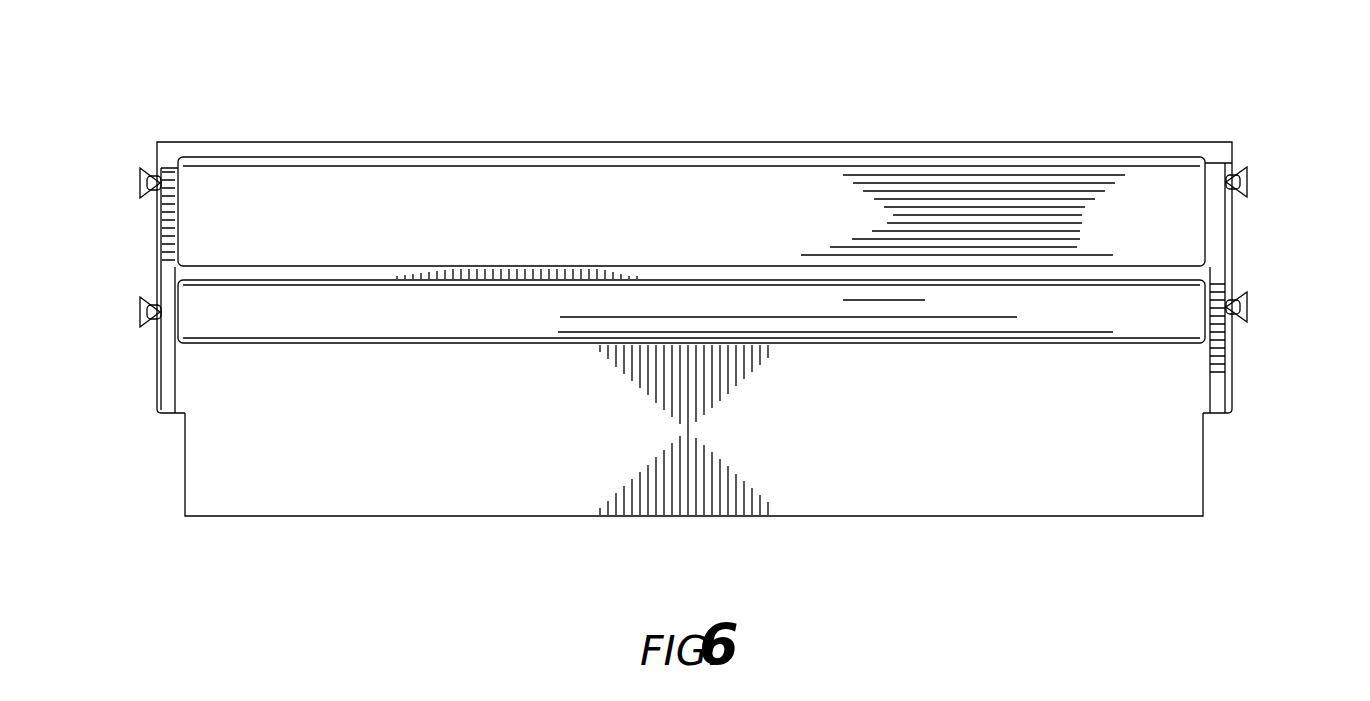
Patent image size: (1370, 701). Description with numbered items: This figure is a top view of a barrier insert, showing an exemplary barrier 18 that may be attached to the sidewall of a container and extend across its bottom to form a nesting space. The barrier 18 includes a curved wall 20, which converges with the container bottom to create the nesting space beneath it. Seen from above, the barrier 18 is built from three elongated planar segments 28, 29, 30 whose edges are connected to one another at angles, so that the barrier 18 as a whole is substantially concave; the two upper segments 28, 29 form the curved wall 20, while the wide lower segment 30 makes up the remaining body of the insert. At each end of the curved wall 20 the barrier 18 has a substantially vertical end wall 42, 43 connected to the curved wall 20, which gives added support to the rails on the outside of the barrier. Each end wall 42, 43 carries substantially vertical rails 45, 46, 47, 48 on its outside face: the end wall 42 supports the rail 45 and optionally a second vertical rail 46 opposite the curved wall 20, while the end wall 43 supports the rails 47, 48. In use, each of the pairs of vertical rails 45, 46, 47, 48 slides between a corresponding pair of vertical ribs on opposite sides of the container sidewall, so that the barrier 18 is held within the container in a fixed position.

The barrier 18 is at (536, 88).
The curved wall 20 is at (703, 295).
The elongated planar segment 28 is at (250, 200).
The elongated planar segment 29 is at (372, 318).
The elongated planar segment 30 is at (277, 478).
The end wall 42 is at (167, 375).
The end wall 43 is at (1225, 248).
The vertical rail 45 is at (140, 183).
The second vertical rail 46 is at (140, 312).
The vertical rail 47 is at (1247, 182).
The vertical rail 48 is at (1247, 307).